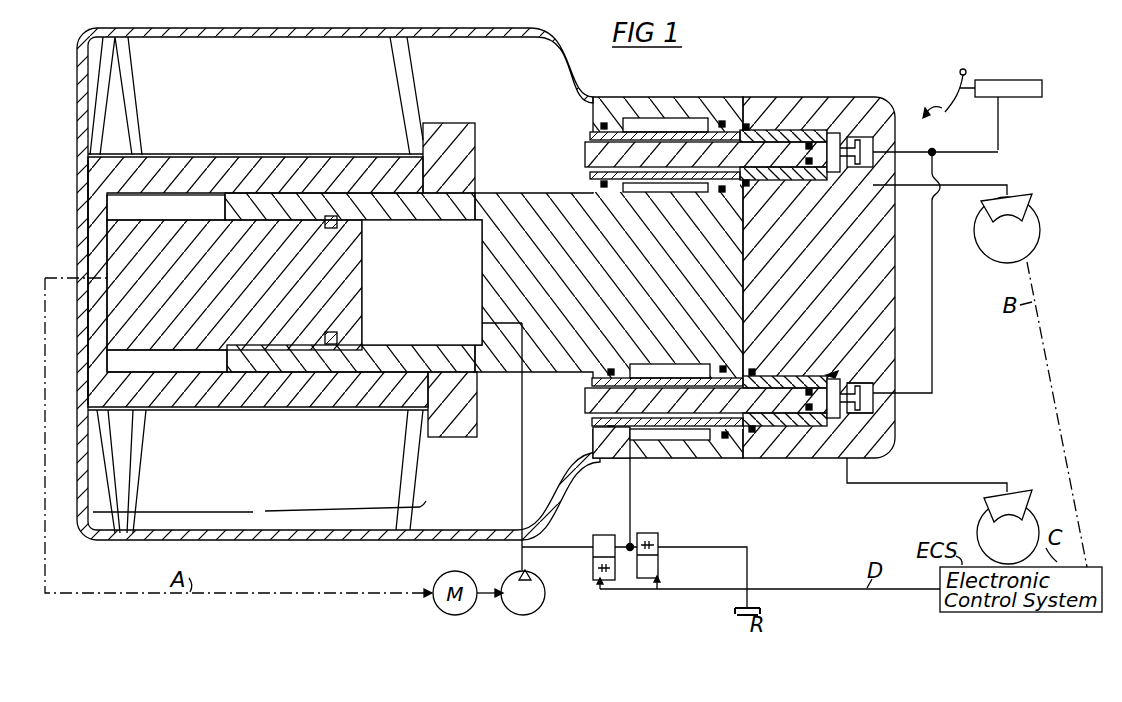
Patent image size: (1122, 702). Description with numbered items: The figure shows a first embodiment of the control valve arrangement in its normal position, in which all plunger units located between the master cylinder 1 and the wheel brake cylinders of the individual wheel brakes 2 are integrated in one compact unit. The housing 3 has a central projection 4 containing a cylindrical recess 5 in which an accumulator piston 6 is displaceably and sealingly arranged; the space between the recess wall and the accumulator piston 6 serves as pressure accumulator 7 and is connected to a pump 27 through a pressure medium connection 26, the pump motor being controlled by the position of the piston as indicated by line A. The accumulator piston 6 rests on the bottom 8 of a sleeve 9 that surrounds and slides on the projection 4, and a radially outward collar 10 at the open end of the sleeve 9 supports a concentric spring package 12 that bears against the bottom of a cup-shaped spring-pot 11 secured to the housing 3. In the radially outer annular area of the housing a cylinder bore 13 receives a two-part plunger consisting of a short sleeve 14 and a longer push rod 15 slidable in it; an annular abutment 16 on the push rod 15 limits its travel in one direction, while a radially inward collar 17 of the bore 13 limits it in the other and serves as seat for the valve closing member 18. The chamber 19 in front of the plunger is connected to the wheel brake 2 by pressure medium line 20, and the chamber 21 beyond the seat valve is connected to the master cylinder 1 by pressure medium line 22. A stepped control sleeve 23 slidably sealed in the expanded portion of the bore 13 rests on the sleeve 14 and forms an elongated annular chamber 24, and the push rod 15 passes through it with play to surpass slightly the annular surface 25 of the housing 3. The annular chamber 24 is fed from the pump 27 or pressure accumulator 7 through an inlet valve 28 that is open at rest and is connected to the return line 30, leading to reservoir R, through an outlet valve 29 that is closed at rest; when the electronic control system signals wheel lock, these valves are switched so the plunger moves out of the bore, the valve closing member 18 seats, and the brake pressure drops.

The master cylinder 1 is at (983, 86).
The wheel brake 2 is at (1017, 205).
The housing 3 is at (700, 97).
The central projection 4 is at (345, 200).
The cylindrical recess 5 is at (272, 210).
The accumulator piston 6 is at (128, 326).
The pressure accumulator 7 is at (428, 237).
The bottom 8 is at (82, 230).
The sleeve 9 is at (192, 170).
The collar 10 is at (443, 140).
The spring-pot 11 is at (183, 29).
The spring package 12 is at (262, 512).
The cylinder bore 13 is at (830, 375).
The sleeve 14 is at (797, 427).
The push rod 15 is at (587, 397).
The abutment 16 is at (833, 430).
The collar 17 is at (850, 386).
The valve closing member 18 is at (878, 397).
The chamber 19 is at (848, 420).
The pressure medium line 20 is at (963, 483).
The chamber 21 is at (875, 410).
The pressure medium line 22 is at (932, 315).
The control sleeve 23 is at (720, 430).
The annular chamber 24 is at (688, 433).
The annular surface 25 is at (598, 440).
The pressure medium connection 26 is at (523, 468).
The pump 27 is at (528, 600).
The inlet valve 28 is at (607, 581).
The outlet valve 29 is at (642, 577).
The return line 30 is at (748, 590).